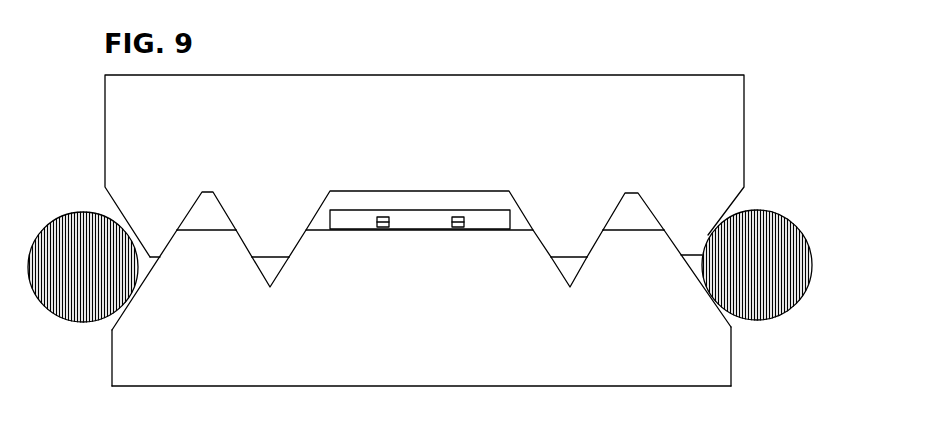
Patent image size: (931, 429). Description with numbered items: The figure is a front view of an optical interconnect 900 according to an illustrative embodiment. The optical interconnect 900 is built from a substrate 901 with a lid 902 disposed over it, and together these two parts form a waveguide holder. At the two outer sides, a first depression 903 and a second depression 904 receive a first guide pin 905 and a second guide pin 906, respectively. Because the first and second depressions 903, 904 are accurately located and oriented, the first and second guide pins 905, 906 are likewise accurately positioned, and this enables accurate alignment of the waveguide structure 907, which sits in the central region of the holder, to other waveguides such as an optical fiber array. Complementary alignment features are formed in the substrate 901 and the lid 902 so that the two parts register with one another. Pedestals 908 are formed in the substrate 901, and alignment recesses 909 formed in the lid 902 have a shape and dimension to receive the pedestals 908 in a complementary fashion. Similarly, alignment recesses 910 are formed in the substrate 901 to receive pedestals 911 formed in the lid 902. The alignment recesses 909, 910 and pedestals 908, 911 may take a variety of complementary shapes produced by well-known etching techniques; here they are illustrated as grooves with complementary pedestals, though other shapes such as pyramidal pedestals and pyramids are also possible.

The optical interconnect 900 is at (812, 74).
The substrate 901 is at (730, 347).
The lid 902 is at (720, 108).
The first depression 903 is at (733, 328).
The second depression 904 is at (112, 323).
The first guide pin 905 is at (785, 213).
The second guide pin 906 is at (80, 212).
The waveguide structure 907 is at (477, 217).
The pedestals 908 is at (186, 250).
The alignment recesses 909 is at (227, 200).
The alignment recesses 910 is at (257, 293).
The pedestals 911 is at (317, 212).